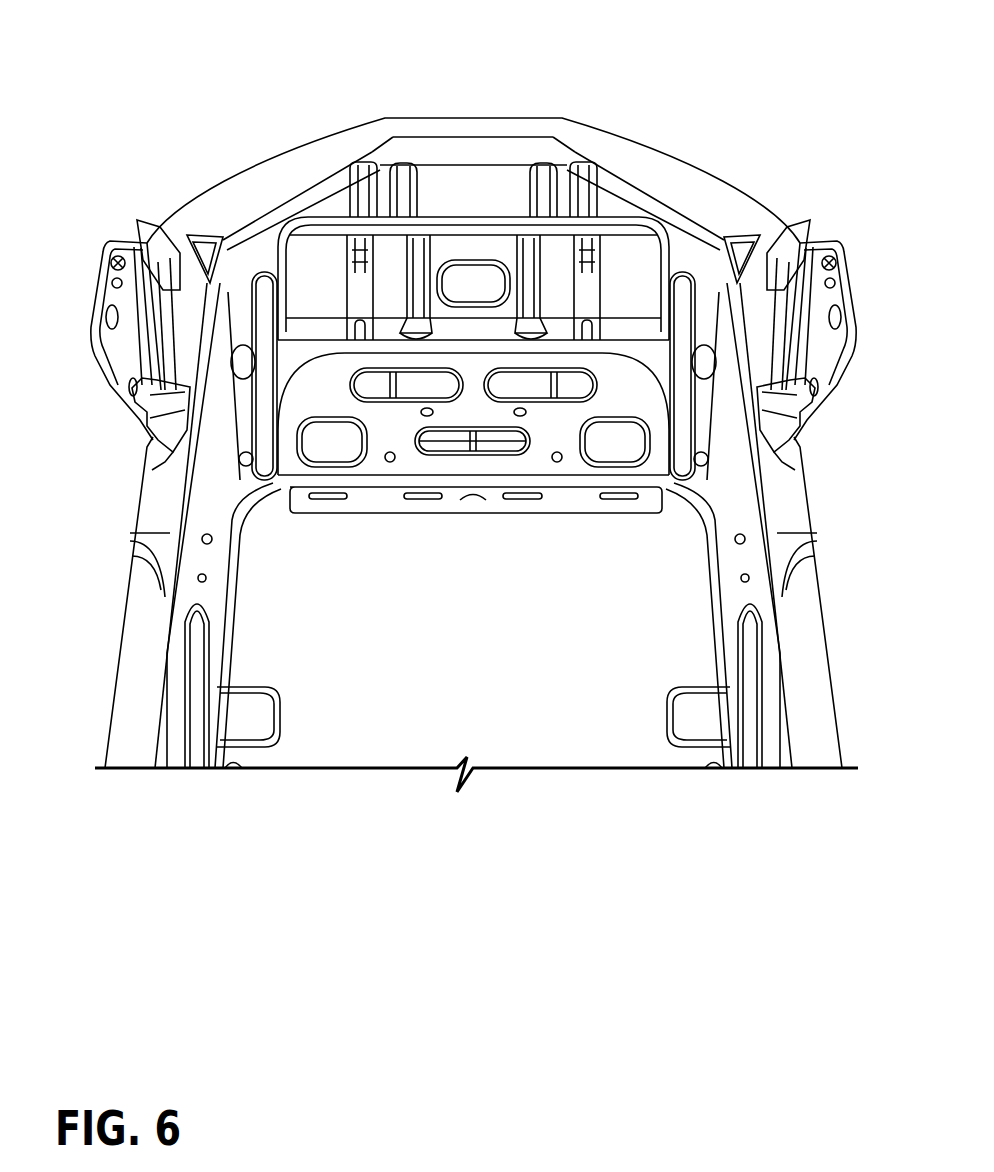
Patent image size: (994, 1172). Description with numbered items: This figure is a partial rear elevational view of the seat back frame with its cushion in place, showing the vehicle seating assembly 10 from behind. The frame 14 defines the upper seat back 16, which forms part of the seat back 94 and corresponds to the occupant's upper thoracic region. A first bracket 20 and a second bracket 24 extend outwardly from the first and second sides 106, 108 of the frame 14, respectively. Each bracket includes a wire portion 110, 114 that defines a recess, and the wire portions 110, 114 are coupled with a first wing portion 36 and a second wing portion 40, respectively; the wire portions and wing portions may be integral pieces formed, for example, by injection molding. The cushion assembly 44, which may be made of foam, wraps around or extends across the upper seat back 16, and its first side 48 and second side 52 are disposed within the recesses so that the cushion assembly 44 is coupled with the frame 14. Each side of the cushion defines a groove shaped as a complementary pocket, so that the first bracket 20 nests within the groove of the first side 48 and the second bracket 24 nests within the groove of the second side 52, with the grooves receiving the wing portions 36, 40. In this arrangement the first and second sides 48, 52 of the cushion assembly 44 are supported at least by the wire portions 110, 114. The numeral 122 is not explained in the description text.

The vehicle seating assembly 10 is at (212, 123).
The frame 14 is at (838, 697).
The upper seat back 16 is at (388, 540).
The first bracket 20 is at (825, 402).
The second bracket 24 is at (122, 408).
The first wing portion 36 is at (840, 333).
The second wing portion 40 is at (98, 338).
The cushion assembly 44 is at (742, 185).
The first side 48 is at (803, 247).
The second side 52 is at (152, 228).
The seat back 94 is at (822, 612).
The first side of the frame 106 is at (773, 532).
The second side of the frame 108 is at (183, 490).
The wire portion 110 is at (817, 287).
The wire portion 114 is at (130, 303).
The strut 122 is at (363, 297).